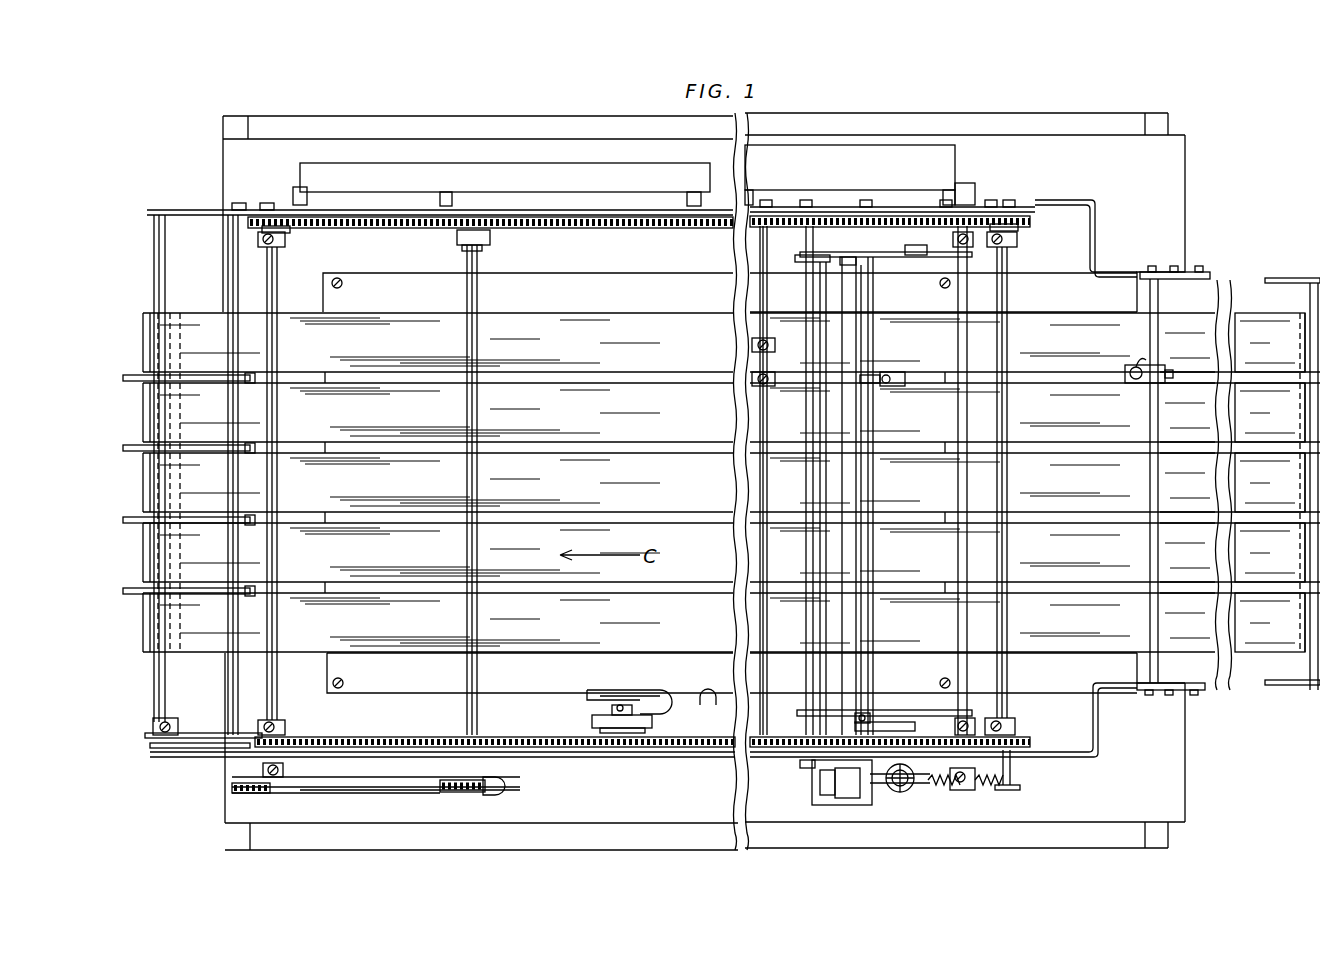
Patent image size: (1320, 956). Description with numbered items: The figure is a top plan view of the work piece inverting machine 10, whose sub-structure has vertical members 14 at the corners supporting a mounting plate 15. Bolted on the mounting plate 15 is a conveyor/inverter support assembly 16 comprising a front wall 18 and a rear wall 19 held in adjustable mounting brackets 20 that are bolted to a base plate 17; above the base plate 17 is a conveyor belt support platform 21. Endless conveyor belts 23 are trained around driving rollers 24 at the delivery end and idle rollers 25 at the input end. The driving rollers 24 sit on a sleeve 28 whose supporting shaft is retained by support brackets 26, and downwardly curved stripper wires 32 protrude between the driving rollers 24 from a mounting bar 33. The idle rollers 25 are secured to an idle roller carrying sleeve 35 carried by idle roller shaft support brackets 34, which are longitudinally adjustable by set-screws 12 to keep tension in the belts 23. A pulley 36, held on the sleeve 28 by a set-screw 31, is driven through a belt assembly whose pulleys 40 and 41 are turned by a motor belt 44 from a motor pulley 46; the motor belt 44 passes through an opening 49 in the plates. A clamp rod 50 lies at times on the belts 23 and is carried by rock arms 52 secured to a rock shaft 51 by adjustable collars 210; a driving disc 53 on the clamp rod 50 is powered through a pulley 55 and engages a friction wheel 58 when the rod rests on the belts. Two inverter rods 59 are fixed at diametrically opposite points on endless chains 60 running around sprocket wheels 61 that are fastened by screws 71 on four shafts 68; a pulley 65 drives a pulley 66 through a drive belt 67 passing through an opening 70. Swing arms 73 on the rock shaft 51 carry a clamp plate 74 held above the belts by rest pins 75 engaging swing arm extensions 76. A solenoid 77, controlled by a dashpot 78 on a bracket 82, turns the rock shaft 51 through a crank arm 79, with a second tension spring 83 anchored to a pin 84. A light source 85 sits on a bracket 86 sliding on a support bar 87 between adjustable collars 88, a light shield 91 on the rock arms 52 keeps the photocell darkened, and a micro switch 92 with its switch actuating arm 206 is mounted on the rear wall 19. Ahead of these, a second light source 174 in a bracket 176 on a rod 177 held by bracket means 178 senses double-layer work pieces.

The board stacking machine 10 is at (794, 857).
The set-screws 12 is at (892, 214).
The vertical members 14 is at (236, 115).
The mounting plate 15 is at (620, 848).
The conveyor/inverter support assembly 16 is at (645, 768).
The base plate 17 is at (580, 823).
The front wall 18 is at (692, 757).
The rear wall 19 is at (480, 205).
The adjustable mounting brackets 20 is at (300, 192).
The conveyor belt support platform 21 is at (432, 296).
The endless conveyor belts 23 is at (1290, 354).
The driving rollers 24 is at (183, 353).
The idle rollers 25 is at (1299, 326).
The support brackets 26 is at (182, 211).
The sleeve 28 is at (153, 255).
The set-screw 31 is at (160, 725).
The stripper wires 32 is at (180, 408).
The mounting bar 33 is at (228, 677).
The idle roller shaft support brackets 34 is at (1290, 278).
The idle roller carrying sleeve 35 is at (1308, 686).
The pulley 36 is at (152, 748).
The pulley 40 is at (592, 720).
The pulley 41 is at (680, 700).
The motor belt 44 is at (640, 690).
The motor pulley 46 is at (200, 733).
The opening 49 is at (710, 690).
The clamp rod 50 is at (873, 562).
The rock shaft 51 is at (968, 500).
The rock arms 52 is at (880, 250).
The driving disc 53 is at (808, 763).
The pulley 55 is at (890, 790).
The friction wheel 58 is at (888, 720).
The inverter rods 59 is at (480, 500).
The endless chains 60 is at (680, 228).
The sprocket wheels 61 is at (278, 217).
The pulley 65 is at (500, 795).
The pulley 66 is at (235, 792).
The drive belt 67 is at (385, 787).
The shafts 68 is at (277, 280).
The opening 70 is at (505, 783).
The screws 71 is at (285, 240).
The swing arms 73 is at (920, 258).
The clamp plate 74 is at (772, 360).
The rest pins 75 is at (800, 228).
The swing arm extensions 76 is at (824, 258).
The solenoid 77 is at (812, 795).
The dashpot 78 is at (858, 775).
The crank arm 79 is at (905, 792).
The bracket 82 is at (932, 785).
The second tension spring 83 is at (975, 790).
The pin 84 is at (1015, 776).
The light source 85 is at (880, 371).
The bracket 86 is at (905, 375).
The support bar 87 is at (755, 412).
The adjustable collars 88 is at (751, 346).
The light shield 91 is at (870, 497).
The micro switch 92 is at (483, 246).
The light source 174 is at (1128, 367).
The bracket 176 is at (1165, 365).
The rod 177 is at (1150, 413).
The bracket means 178 is at (1180, 683).
The switch actuating arm 206 is at (490, 240).
The adjustable collar 210 is at (970, 230).